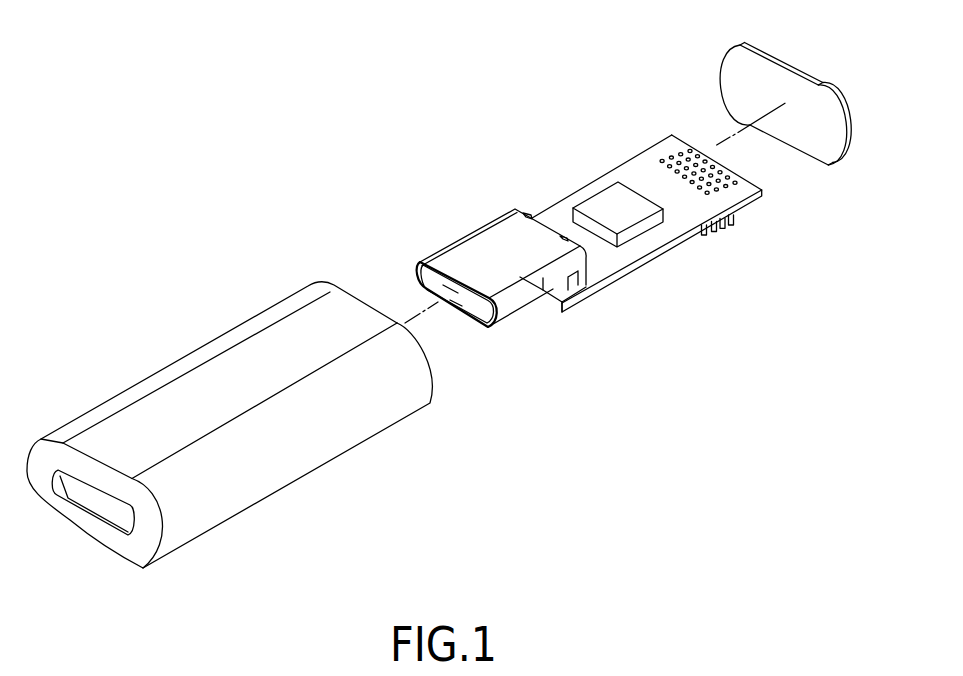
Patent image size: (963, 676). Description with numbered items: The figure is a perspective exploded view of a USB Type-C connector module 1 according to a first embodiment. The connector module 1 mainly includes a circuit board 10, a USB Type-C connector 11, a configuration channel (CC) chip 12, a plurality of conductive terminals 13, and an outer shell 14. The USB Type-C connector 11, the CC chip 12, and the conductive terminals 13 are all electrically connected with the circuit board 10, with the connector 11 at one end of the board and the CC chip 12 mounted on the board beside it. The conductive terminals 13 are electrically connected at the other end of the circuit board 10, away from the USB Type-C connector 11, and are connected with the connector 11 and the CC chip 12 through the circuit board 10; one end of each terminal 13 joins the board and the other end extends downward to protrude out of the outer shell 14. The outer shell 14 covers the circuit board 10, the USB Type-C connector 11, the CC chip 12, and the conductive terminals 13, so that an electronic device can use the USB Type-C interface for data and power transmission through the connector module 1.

The connector module 1 is at (449, 25).
The circuit board 10 is at (632, 167).
The USB Type-C connector 11 is at (467, 253).
The configuration channel (CC) chip 12 is at (598, 200).
The conductive terminals 13 is at (732, 222).
The outer shell 14 is at (137, 388).